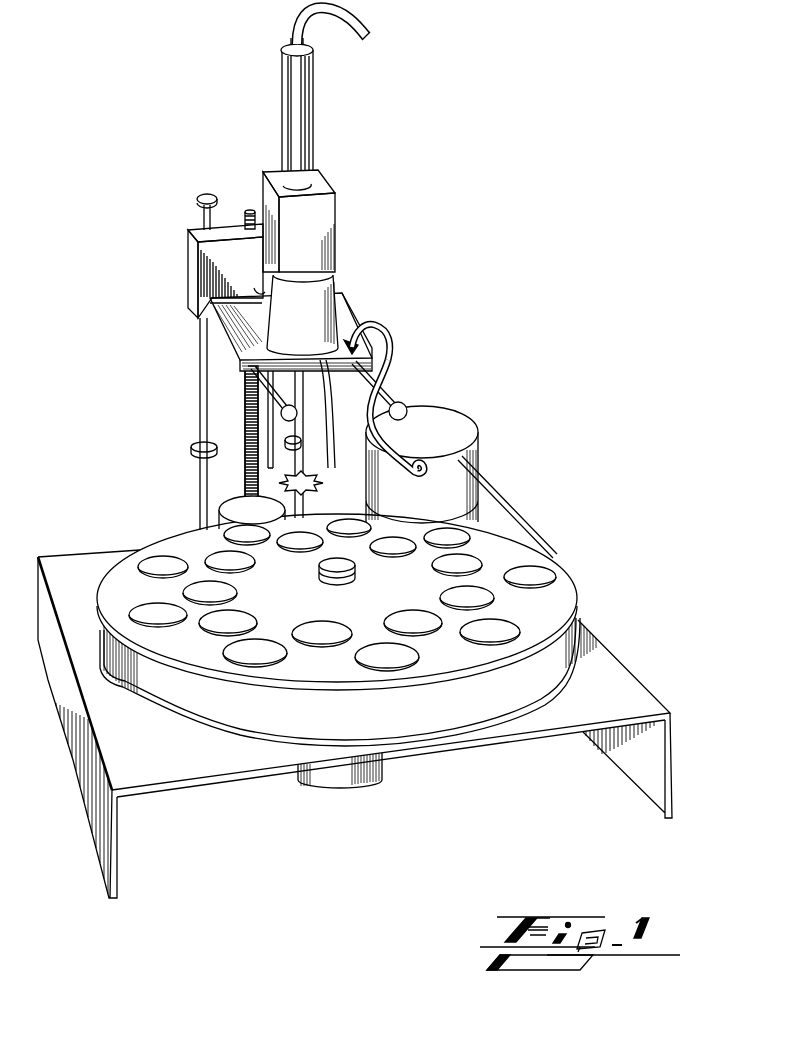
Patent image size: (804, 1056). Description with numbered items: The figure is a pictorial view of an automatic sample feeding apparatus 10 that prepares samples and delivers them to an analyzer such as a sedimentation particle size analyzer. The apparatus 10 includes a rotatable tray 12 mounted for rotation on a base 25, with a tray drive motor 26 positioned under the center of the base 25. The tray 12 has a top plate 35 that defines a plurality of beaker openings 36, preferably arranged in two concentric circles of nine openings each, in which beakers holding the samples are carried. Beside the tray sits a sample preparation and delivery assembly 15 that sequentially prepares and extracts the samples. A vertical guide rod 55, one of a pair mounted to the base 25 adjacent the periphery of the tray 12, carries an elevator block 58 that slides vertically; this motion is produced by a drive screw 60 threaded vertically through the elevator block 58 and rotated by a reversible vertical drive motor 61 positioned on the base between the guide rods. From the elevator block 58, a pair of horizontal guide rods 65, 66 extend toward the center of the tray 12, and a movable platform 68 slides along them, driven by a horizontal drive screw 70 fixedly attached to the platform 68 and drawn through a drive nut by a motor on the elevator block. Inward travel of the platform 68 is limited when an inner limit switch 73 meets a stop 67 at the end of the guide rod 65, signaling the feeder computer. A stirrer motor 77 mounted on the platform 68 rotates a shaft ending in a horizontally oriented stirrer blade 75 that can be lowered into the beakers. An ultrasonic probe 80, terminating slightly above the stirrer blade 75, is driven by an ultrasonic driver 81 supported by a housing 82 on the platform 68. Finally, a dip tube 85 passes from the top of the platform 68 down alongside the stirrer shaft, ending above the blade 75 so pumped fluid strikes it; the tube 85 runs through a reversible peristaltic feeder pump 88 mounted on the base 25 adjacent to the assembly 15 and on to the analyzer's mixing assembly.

The automatic sample feeding apparatus 10 is at (378, 453).
The rotatable tray 12 is at (378, 611).
The sample preparation and delivery assembly 15 is at (257, 269).
The base 25 is at (635, 698).
The tray drive motor 26 is at (352, 785).
The top plate 35 is at (570, 595).
The beaker openings 36 is at (557, 566).
The vertical guide rod 55 is at (203, 408).
The elevator block 58 is at (190, 262).
The drive screw 60 is at (247, 423).
The reversible vertical drive motor 61 is at (230, 500).
The horizontal guide rod 65 is at (380, 415).
The horizontal guide rod 66 is at (280, 390).
The stop 67 is at (406, 390).
The movable platform 68 is at (227, 357).
The horizontal drive screw 70 is at (258, 290).
The inner limit switch 73 is at (365, 333).
The stirrer blade 75 is at (305, 485).
The stirrer motor 77 is at (337, 300).
The ultrasonic probe 80 is at (247, 445).
The ultrasonic driver 81 is at (283, 120).
The housing 82 is at (328, 213).
The dip tube 85 is at (390, 356).
The reversible peristaltic feeder pump 88 is at (467, 415).